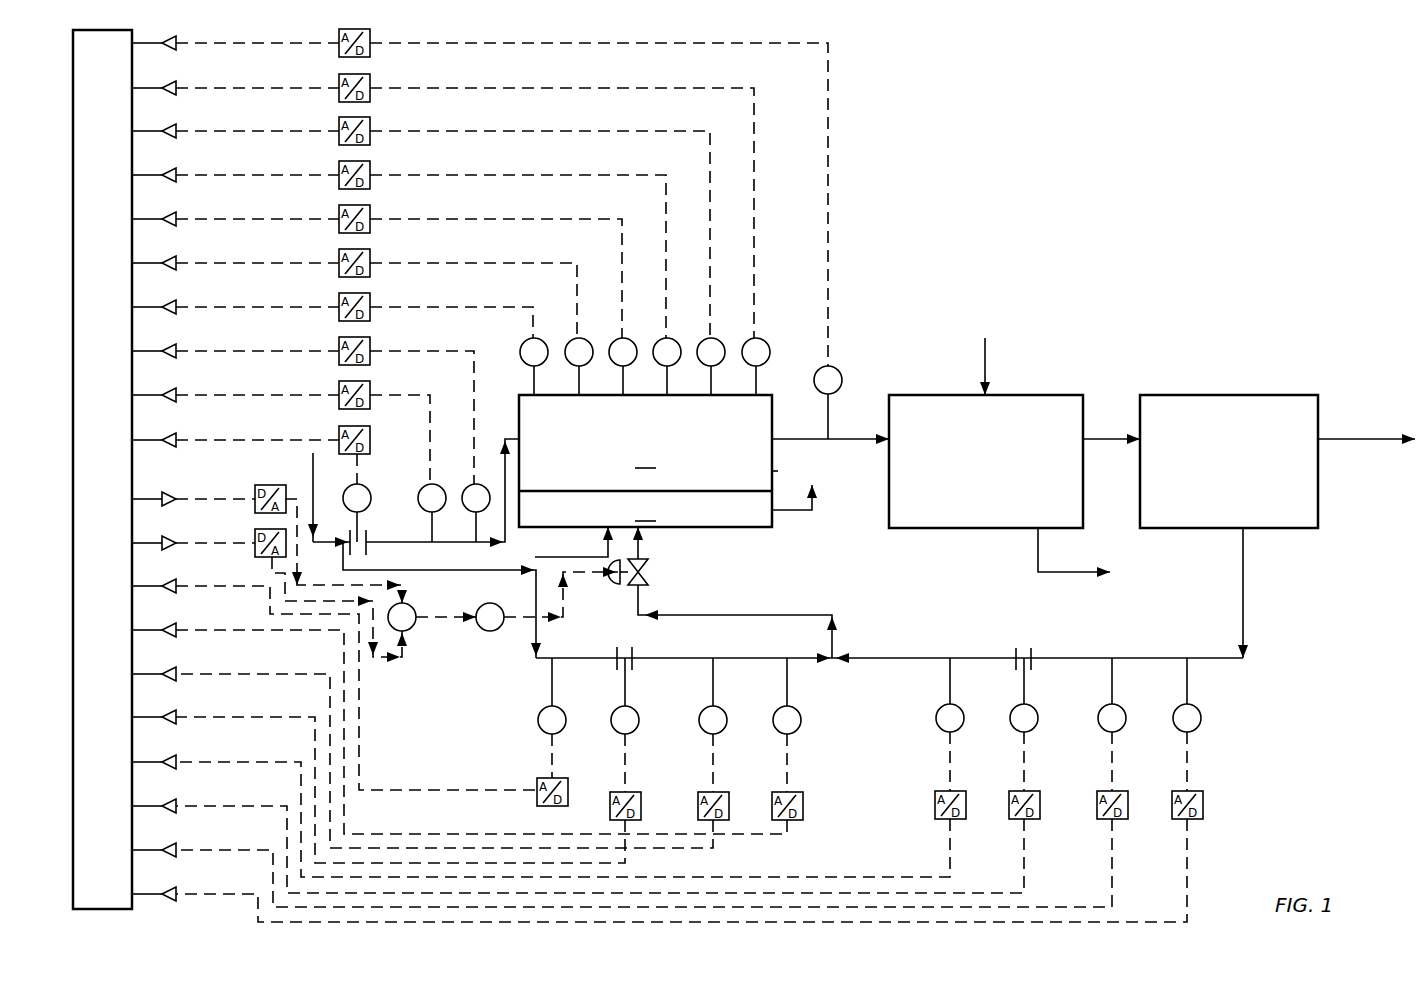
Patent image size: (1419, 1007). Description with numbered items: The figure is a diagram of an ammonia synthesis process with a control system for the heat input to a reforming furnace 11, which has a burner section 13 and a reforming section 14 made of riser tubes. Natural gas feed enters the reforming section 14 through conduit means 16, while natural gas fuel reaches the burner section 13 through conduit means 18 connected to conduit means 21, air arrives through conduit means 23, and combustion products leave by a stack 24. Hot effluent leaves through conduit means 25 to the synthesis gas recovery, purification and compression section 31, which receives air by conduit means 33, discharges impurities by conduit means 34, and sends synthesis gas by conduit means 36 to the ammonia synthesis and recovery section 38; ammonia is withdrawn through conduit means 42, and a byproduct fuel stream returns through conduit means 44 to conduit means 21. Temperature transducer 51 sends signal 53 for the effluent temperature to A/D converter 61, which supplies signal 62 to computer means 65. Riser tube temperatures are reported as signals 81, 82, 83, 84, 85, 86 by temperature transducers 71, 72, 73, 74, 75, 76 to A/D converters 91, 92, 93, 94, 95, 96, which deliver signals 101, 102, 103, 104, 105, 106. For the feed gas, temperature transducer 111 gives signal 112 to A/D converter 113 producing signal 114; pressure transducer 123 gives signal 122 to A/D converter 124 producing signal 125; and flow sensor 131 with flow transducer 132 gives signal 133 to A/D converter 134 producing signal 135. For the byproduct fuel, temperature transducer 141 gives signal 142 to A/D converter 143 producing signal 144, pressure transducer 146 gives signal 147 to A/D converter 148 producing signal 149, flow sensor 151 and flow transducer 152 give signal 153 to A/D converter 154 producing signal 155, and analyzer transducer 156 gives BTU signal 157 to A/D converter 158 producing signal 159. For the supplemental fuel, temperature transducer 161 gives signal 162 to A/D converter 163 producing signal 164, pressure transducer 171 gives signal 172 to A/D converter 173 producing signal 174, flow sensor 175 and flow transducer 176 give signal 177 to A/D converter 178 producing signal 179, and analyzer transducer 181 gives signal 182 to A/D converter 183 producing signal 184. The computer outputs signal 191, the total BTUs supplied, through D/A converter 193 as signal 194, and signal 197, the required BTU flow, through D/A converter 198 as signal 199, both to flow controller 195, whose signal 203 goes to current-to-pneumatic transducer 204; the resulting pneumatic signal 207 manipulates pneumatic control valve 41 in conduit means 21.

The reforming furnace 11 is at (778, 471).
The burner section 13 is at (645, 506).
The reforming section 14 is at (645, 461).
The conduit means 16 is at (312, 478).
The conduit means 18 is at (542, 645).
The conduit means 21 is at (731, 615).
The conduit means 23 is at (549, 560).
The vent or stack 24 is at (812, 513).
The conduit means 25 is at (846, 439).
The synthesis gas recovery, purification and compression section 31 is at (915, 530).
The conduit means 33 is at (990, 348).
The conduit means 34 is at (1035, 566).
The conduit means 36 is at (1110, 442).
The ammonia synthesis and recovery section 38 is at (1175, 530).
The pneumatic control valve 41 is at (650, 574).
The conduit means 42 is at (1348, 442).
The conduit means 44 is at (1250, 648).
The temperature transducer 51 is at (845, 372).
The signal 53 is at (830, 236).
The analog-to-digital converter 61 is at (372, 38).
The signal 62 is at (284, 43).
The computer means 65 is at (73, 48).
The temperature transducer 71 is at (764, 340).
The temperature transducer 72 is at (719, 340).
The temperature transducer 73 is at (675, 340).
The temperature transducer 74 is at (631, 340).
The temperature transducer 75 is at (587, 340).
The temperature transducer 76 is at (542, 340).
The signal 81 is at (518, 88).
The signal 82 is at (518, 131).
The signal 83 is at (518, 175).
The signal 84 is at (518, 219).
The signal 85 is at (518, 263).
The signal 86 is at (519, 307).
The A/D converter 91 is at (372, 83).
The A/D converter 92 is at (372, 126).
The A/D converter 93 is at (372, 170).
The A/D converter 94 is at (372, 214).
The A/D converter 95 is at (372, 258).
The A/D converter 96 is at (372, 302).
The signal 101 is at (284, 88).
The signal 102 is at (284, 131).
The signal 103 is at (284, 175).
The signal 104 is at (284, 219).
The signal 105 is at (284, 263).
The signal 106 is at (284, 307).
The temperature transducer 111 is at (468, 486).
The signal 112 is at (474, 398).
The A/D converter 113 is at (372, 346).
The signal 114 is at (284, 351).
The signal 122 is at (430, 420).
The pressure transducer 123 is at (422, 486).
The A/D converter 124 is at (372, 390).
The signal 125 is at (284, 395).
The flow sensor 131 is at (382, 545).
The flow transducer 132 is at (368, 510).
The signal 133 is at (360, 468).
The A/D converter 134 is at (372, 435).
The signal 135 is at (284, 440).
The temperature transducer 141 is at (1198, 708).
The signal 142 is at (1187, 745).
The A/D converter 143 is at (1187, 822).
The signal 144 is at (1187, 862).
The pressure transducer 146 is at (1124, 708).
The signal 147 is at (1112, 745).
The A/D converter 148 is at (1112, 822).
The signal 149 is at (1112, 862).
The flow sensor 151 is at (1022, 648).
The flow transducer 152 is at (1036, 708).
The signal 153 is at (1024, 745).
The A/D converter 154 is at (1024, 822).
The signal 155 is at (1024, 862).
The analyzer transducer 156 is at (962, 708).
The signal 157 is at (950, 745).
The A/D converter 158 is at (950, 822).
The signal 159 is at (950, 862).
The temperature transducer 161 is at (799, 710).
The signal 162 is at (784, 764).
The A/D converter 163 is at (799, 792).
The signal 164 is at (789, 832).
The pressure transducer 171 is at (727, 710).
The signal 172 is at (710, 764).
The A/D converter 173 is at (723, 792).
The signal 174 is at (715, 846).
The flow sensor 175 is at (621, 650).
The flow transducer 176 is at (637, 710).
The signal 177 is at (622, 784).
The A/D converter 178 is at (635, 792).
The signal 179 is at (627, 860).
The analyzer transducer 181 is at (560, 710).
The signal 182 is at (548, 768).
The A/D converter 183 is at (568, 778).
The signal 184 is at (420, 790).
The signal 191 is at (222, 499).
The digital-to-analog converter 193 is at (256, 488).
The signal 194 is at (347, 585).
The flow controller 195 is at (414, 625).
The signal 197 is at (200, 543).
The D/A converter 198 is at (256, 538).
The signal 199 is at (385, 660).
The signal 203 is at (445, 617).
The current-to-pneumatic transducer 204 is at (490, 631).
The signal 207 is at (566, 588).